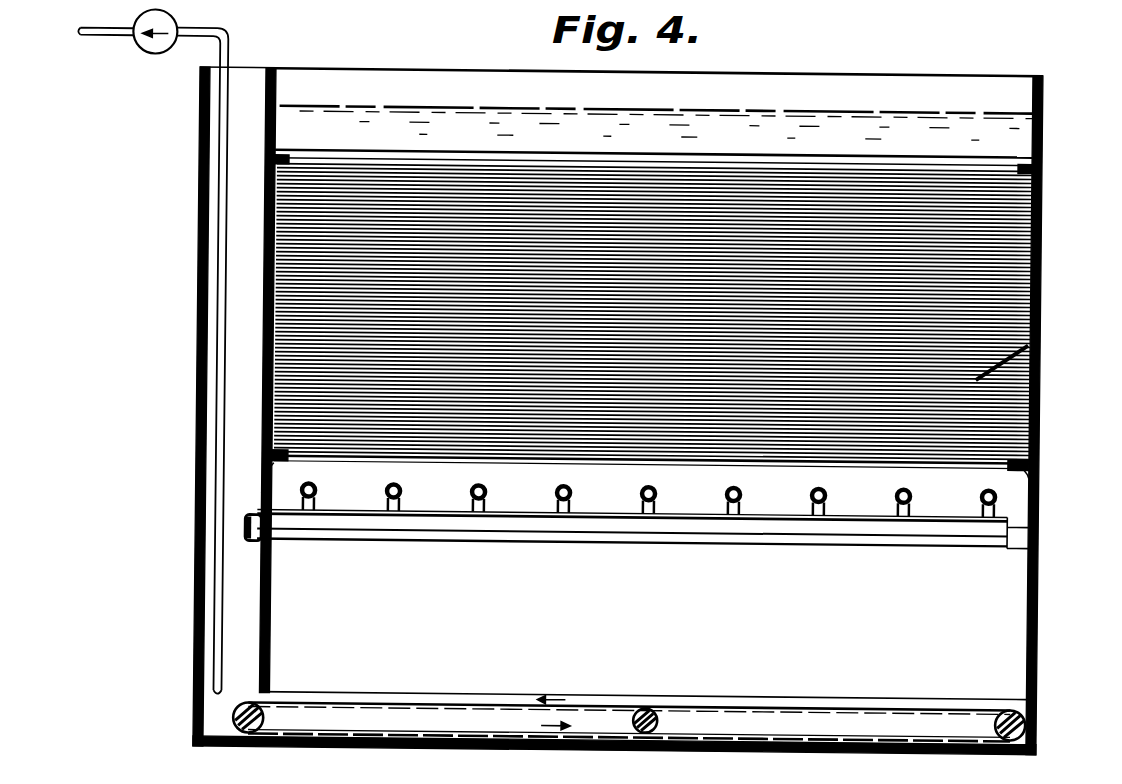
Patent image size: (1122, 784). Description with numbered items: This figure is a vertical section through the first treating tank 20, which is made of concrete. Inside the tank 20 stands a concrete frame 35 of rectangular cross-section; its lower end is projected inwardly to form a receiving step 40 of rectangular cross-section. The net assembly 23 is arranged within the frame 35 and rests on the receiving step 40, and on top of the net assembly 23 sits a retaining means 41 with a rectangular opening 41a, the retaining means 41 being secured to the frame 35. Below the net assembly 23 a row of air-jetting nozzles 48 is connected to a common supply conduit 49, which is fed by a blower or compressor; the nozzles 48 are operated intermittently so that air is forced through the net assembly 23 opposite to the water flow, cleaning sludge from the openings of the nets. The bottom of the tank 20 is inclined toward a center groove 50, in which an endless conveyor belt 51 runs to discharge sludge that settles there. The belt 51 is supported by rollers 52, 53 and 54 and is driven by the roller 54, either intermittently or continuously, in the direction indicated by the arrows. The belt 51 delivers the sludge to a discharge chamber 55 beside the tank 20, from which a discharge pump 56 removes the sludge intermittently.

The first treating tank 20 is at (200, 326).
The net assembly 23 is at (1040, 343).
The frame 35 is at (1036, 266).
The receiving step 40 is at (266, 492).
The retaining means 41 is at (284, 160).
The rectangular opening 41a is at (364, 160).
The air-jetting nozzles 48 is at (476, 488).
The common supply conduit 49 is at (607, 541).
The center groove 50 is at (902, 729).
The endless conveyor belt 51 is at (797, 702).
The roller 52 is at (1036, 712).
The roller 53 is at (656, 705).
The roller 54 is at (243, 712).
The discharge chamber 55 is at (238, 589).
The discharge pump 56 is at (157, 55).